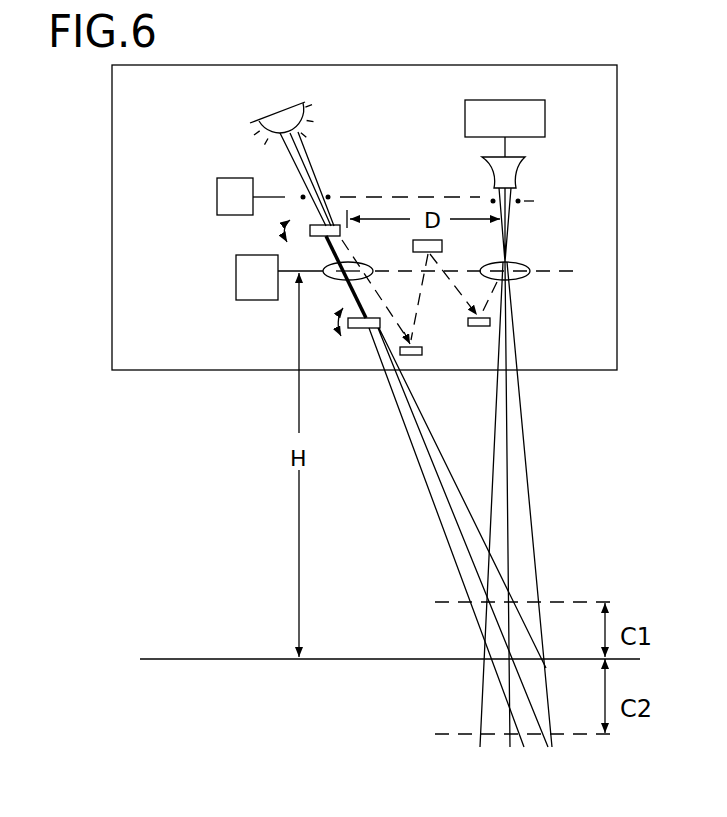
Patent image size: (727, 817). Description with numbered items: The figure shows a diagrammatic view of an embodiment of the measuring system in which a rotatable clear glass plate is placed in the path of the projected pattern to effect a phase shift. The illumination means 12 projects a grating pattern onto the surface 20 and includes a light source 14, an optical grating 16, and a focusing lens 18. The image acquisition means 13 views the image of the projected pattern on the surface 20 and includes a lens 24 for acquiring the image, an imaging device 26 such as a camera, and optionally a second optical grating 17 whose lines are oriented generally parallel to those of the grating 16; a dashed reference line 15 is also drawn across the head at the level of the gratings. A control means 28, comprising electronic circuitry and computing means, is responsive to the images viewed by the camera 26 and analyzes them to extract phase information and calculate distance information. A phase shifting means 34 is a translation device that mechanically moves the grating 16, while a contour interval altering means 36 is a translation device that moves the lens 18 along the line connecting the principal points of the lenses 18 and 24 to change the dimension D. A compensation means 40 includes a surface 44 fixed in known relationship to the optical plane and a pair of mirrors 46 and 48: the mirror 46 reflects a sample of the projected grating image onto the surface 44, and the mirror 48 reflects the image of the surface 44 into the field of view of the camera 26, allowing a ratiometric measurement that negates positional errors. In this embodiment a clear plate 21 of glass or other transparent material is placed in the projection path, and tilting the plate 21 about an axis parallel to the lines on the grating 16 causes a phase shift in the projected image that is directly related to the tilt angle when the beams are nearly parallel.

The illumination means 12 is at (329, 138).
The image acquisition means 13 is at (582, 246).
The light source 14 is at (280, 124).
The reference plane line 15 is at (412, 193).
The optical grating 16 is at (328, 186).
The second optical grating 17 is at (539, 201).
The focusing lens 18 is at (337, 279).
The surface 20 is at (226, 658).
The clear plate 21 is at (323, 237).
The lens 24 is at (521, 276).
The imaging device 26 is at (510, 170).
The control means 28 is at (536, 114).
The phase shifting means 34 is at (228, 198).
The contour interval altering means 36 is at (250, 278).
The compensation means 40 is at (460, 346).
The surface 44 is at (413, 247).
The mirror 46 is at (418, 356).
The mirror 48 is at (468, 323).